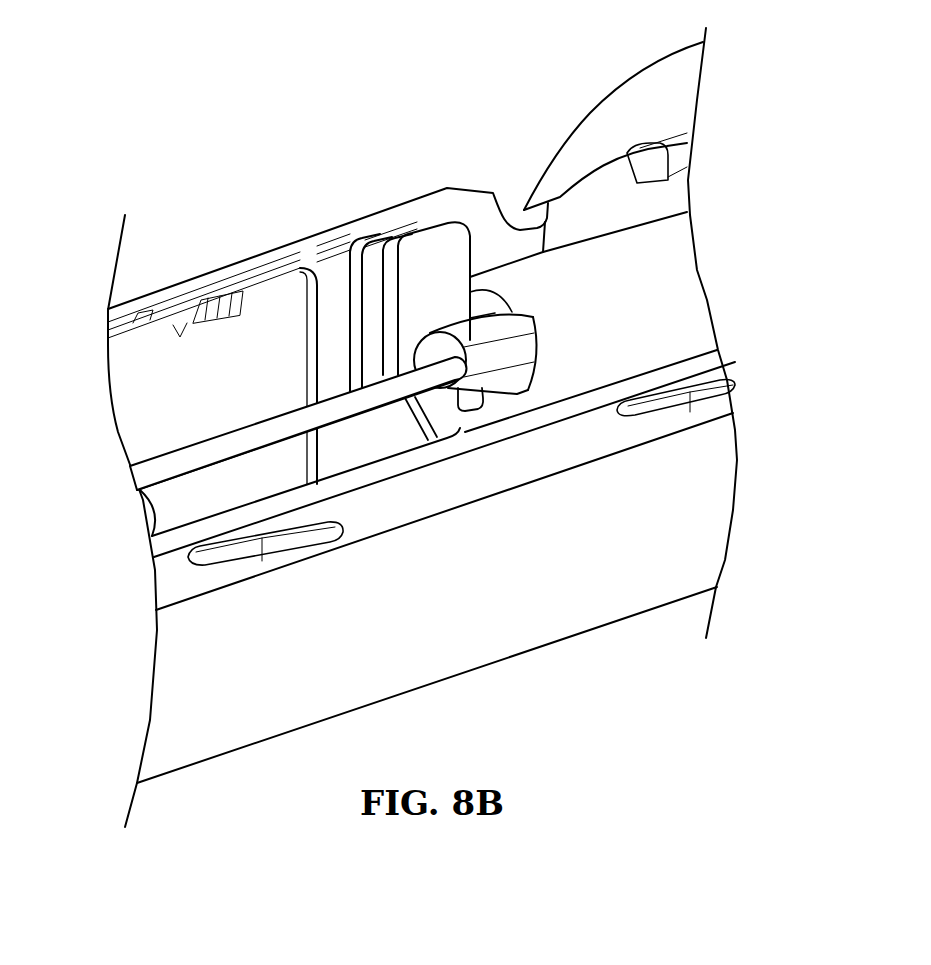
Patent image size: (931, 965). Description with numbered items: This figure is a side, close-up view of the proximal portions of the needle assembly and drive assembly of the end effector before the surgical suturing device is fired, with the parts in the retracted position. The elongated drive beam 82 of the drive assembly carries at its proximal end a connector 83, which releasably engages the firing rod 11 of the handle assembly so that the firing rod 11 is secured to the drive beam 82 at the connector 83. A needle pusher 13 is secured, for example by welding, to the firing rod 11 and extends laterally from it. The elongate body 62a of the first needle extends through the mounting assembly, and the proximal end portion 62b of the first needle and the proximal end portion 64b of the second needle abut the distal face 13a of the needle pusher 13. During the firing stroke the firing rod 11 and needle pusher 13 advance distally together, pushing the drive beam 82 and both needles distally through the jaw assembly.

The firing rod 11 is at (348, 450).
The needle pusher 13 is at (512, 342).
The distal face 13a is at (468, 398).
The elongate body 62a is at (177, 463).
The proximal end portion 62b is at (443, 367).
The proximal end portion 64b is at (450, 443).
The elongated drive beam 82 is at (257, 317).
The connector 83 is at (422, 263).